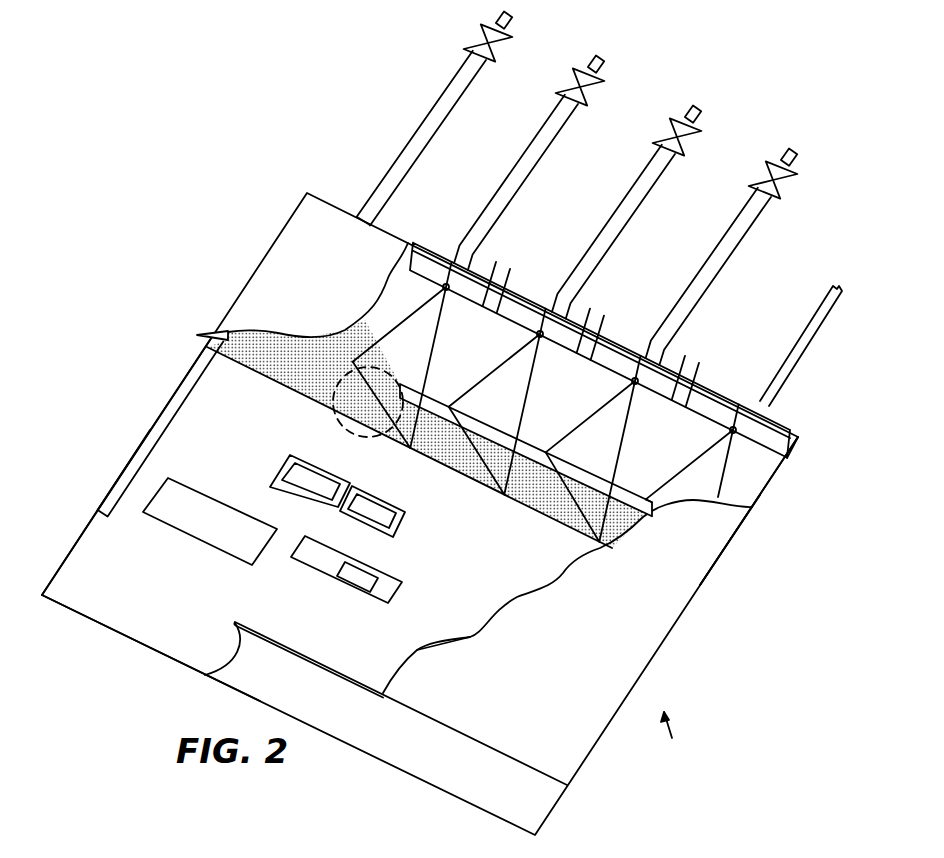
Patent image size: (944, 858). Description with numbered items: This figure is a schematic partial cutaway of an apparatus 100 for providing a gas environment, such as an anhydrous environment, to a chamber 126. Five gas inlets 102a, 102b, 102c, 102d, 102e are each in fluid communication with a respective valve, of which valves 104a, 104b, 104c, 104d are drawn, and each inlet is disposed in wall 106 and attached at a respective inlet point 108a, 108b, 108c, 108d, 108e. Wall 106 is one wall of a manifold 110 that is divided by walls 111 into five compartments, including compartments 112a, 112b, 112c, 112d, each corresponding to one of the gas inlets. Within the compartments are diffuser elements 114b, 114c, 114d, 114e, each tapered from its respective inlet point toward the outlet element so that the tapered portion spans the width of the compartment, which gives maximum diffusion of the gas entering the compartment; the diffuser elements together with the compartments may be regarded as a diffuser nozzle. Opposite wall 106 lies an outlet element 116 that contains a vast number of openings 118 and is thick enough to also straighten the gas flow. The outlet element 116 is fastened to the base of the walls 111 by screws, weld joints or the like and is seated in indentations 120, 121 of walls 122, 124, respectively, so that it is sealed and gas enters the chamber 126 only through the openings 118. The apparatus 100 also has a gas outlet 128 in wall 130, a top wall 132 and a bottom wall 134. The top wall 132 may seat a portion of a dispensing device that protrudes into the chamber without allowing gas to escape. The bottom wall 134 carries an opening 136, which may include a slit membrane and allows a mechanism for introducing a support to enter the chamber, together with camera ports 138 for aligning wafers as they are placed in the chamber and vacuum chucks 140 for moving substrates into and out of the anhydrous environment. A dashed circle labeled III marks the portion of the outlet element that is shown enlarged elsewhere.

The apparatus 100 is at (681, 741).
The gas inlet 102a is at (440, 105).
The gas inlet 102b is at (543, 140).
The gas inlet 102c is at (638, 192).
The gas inlet 102d is at (727, 240).
The gas inlet 102e is at (785, 345).
The valve 104a is at (472, 40).
The valve 104b is at (568, 88).
The valve 104c is at (662, 128).
The valve 104d is at (758, 172).
The wall 106 is at (608, 345).
The inlet point 108a is at (362, 215).
The inlet point 108b is at (446, 283).
The inlet point 108c is at (542, 330).
The inlet point 108d is at (638, 378).
The inlet point 108e is at (736, 429).
The manifold 110 is at (760, 505).
The walls 111 is at (256, 373).
The compartment 112a is at (290, 250).
The compartment 112b is at (519, 414).
The compartment 112c is at (612, 459).
The compartment 112d is at (714, 499).
The diffuser element 114b is at (388, 318).
The diffuser element 114c is at (525, 335).
The diffuser element 114d is at (625, 370).
The diffuser element 114e is at (762, 400).
The outlet element 116 is at (535, 512).
The openings 118 is at (215, 336).
The indentation 120 is at (250, 307).
The indentation 121 is at (730, 565).
The wall 122 is at (222, 318).
The wall 124 is at (660, 650).
The chamber 126 is at (160, 455).
The gas outlet 128 is at (163, 622).
The wall 130 is at (385, 722).
The top wall 132 is at (328, 304).
The bottom wall 134 is at (459, 604).
The opening 136 is at (162, 490).
The camera ports 138 is at (375, 496).
The vacuum chucks 140 is at (375, 585).
The detail circle III is at (336, 424).